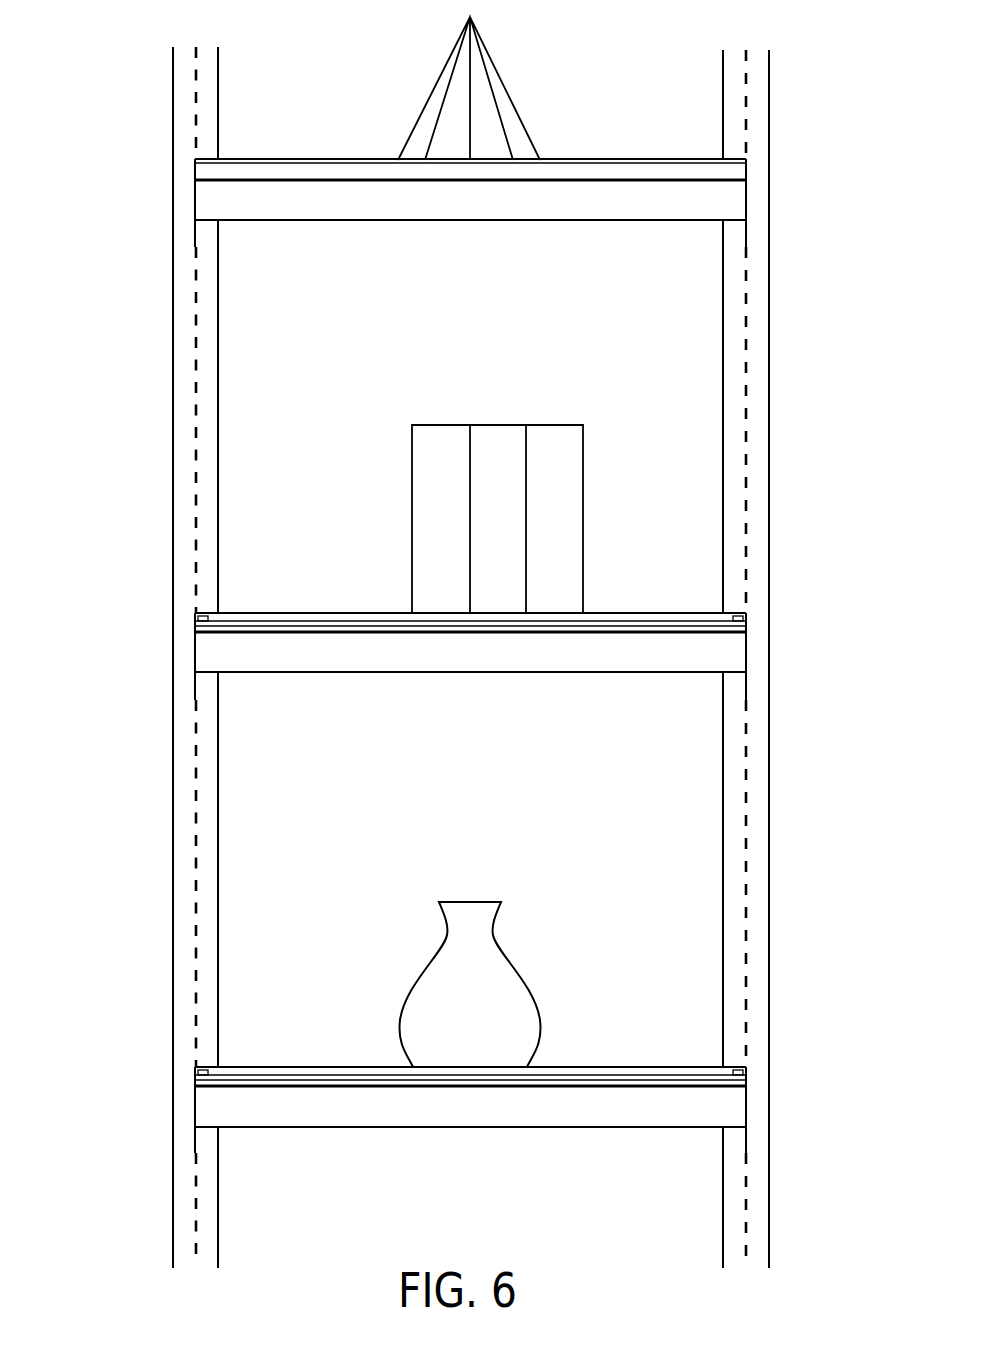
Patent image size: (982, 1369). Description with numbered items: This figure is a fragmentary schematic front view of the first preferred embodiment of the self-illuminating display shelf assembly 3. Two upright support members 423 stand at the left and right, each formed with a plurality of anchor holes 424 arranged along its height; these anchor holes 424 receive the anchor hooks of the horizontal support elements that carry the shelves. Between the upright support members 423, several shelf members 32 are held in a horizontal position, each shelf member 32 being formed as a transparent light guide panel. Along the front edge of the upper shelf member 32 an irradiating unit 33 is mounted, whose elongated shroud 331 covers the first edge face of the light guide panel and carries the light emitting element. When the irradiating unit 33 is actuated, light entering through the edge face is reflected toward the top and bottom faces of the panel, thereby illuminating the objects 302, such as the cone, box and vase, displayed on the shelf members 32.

The self-illuminating display shelf assembly 3 is at (134, 101).
The shelf member 32 is at (650, 150).
The irradiating unit 33 is at (448, 235).
The object 302 is at (522, 123).
The elongated shroud 331 is at (322, 219).
The upright support member 423 is at (757, 130).
The anchor hole 424 is at (745, 962).